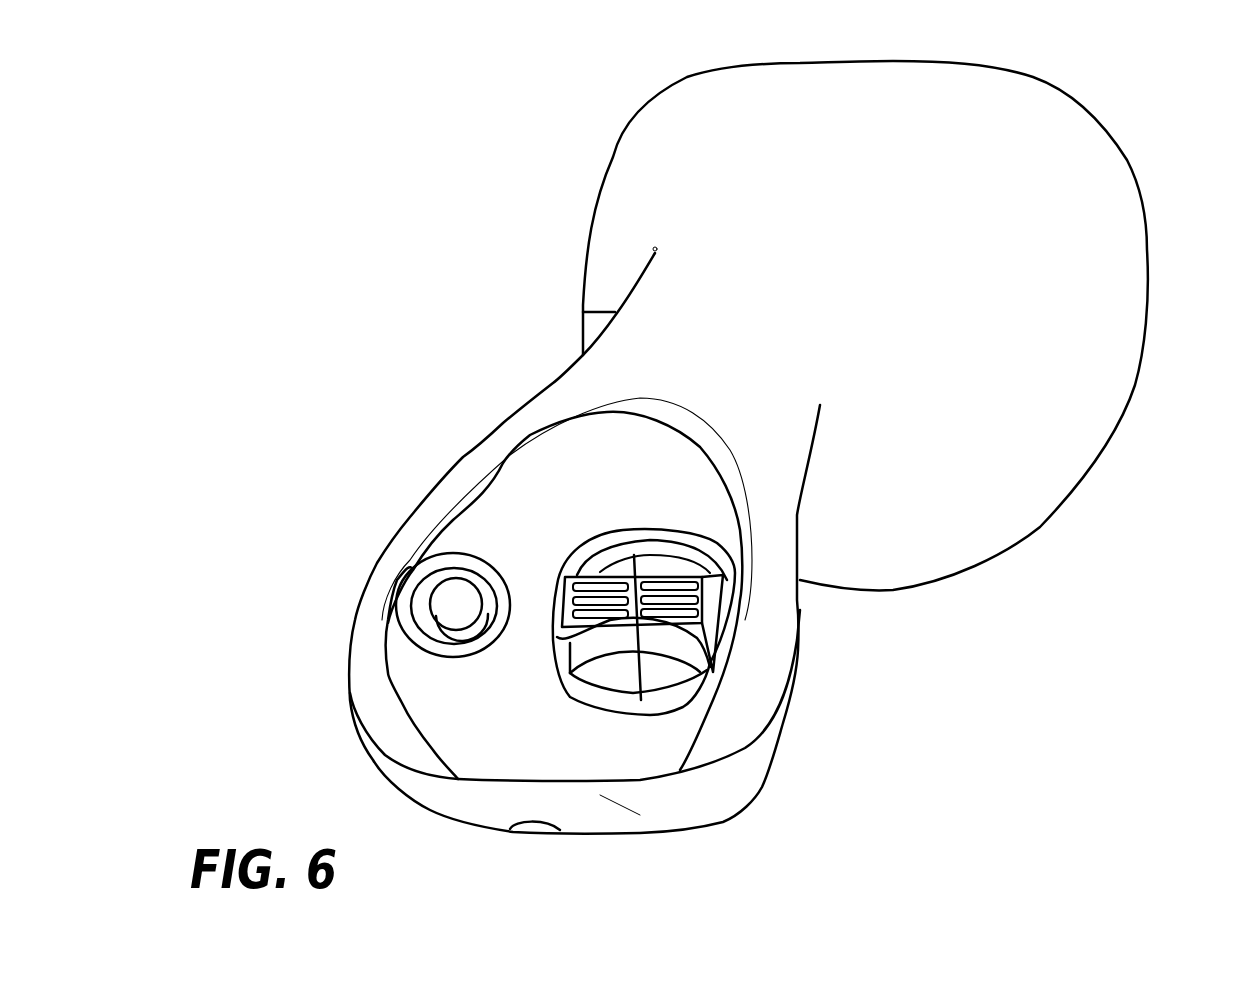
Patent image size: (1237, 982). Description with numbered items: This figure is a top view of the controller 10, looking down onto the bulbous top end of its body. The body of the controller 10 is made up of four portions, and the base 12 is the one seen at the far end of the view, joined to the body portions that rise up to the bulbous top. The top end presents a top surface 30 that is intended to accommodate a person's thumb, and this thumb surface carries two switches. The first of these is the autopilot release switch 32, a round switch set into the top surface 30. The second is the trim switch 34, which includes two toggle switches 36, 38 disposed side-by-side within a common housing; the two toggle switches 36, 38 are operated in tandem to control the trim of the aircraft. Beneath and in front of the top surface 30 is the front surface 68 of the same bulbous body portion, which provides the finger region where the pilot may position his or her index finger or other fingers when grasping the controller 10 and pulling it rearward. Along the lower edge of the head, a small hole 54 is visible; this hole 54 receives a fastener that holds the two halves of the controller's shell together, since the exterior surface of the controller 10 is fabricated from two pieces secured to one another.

The controller 10 is at (531, 288).
The base 12 is at (1095, 346).
The top surface 30 is at (503, 488).
The autopilot release switch 32 is at (447, 608).
The trim switch 34 is at (730, 594).
The toggle switch 36 is at (715, 640).
The toggle switch 38 is at (577, 651).
The hole 54 is at (538, 827).
The front surface 68 is at (627, 811).